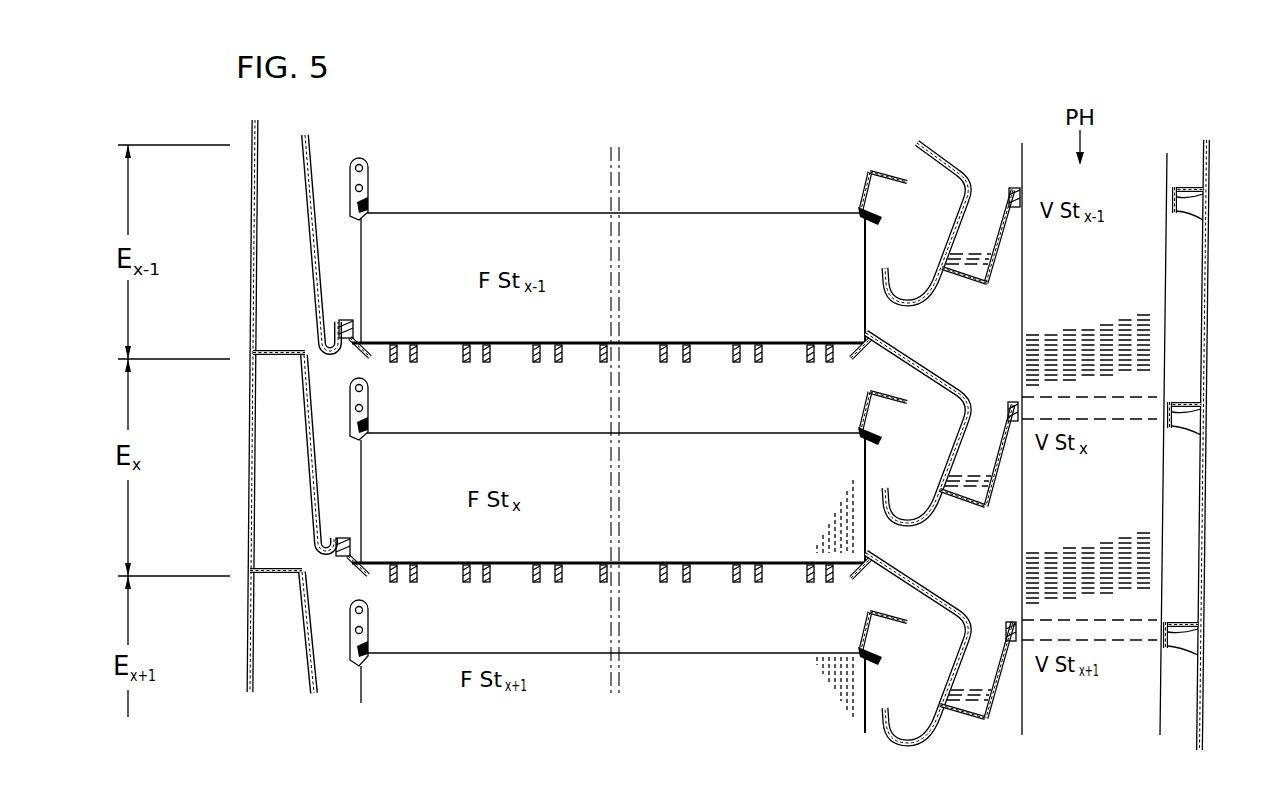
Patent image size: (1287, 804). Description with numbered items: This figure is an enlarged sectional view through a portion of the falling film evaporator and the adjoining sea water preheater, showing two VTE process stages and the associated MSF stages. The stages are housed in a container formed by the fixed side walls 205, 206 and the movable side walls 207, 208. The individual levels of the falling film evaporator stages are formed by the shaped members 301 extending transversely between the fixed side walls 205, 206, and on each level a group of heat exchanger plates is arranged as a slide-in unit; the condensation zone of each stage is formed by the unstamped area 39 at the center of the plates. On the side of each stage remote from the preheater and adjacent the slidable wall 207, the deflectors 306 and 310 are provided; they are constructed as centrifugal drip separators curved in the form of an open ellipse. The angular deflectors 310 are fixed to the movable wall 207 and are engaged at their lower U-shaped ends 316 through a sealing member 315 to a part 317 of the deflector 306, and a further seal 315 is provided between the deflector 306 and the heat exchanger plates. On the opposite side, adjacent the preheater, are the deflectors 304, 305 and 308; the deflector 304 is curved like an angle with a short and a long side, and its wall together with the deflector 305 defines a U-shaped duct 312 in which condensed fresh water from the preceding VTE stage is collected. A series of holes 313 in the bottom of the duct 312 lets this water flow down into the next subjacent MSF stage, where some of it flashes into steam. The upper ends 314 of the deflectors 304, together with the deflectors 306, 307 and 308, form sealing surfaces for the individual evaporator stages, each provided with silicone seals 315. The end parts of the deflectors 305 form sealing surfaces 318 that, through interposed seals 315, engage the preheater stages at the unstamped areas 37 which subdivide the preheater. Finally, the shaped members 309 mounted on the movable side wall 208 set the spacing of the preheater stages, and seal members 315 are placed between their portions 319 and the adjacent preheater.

The unstamped areas 37 is at (1150, 405).
The unstamped area 39 is at (622, 190).
The fixed side wall 205 is at (736, 403).
The fixed side wall 206 is at (608, 473).
The movable side wall 207 is at (249, 483).
The movable side wall 208 is at (1207, 302).
The shaped members 301 is at (533, 355).
The deflector 304 is at (940, 374).
The deflector 305 is at (1000, 238).
The deflector 306 is at (352, 352).
The deflector 307 is at (368, 205).
The deflector 308 is at (864, 180).
The shaped members 309 is at (1204, 191).
The angular deflector 310 is at (305, 228).
The U-shaped duct 312 is at (972, 690).
The holes 313 is at (977, 279).
The upper ends 314 is at (893, 358).
The silicone seals 315 is at (368, 212).
The lower U-shaped ends 316 is at (338, 330).
The part 317 is at (352, 322).
The sealing surfaces 318 is at (1010, 193).
The portions 319 is at (1204, 222).